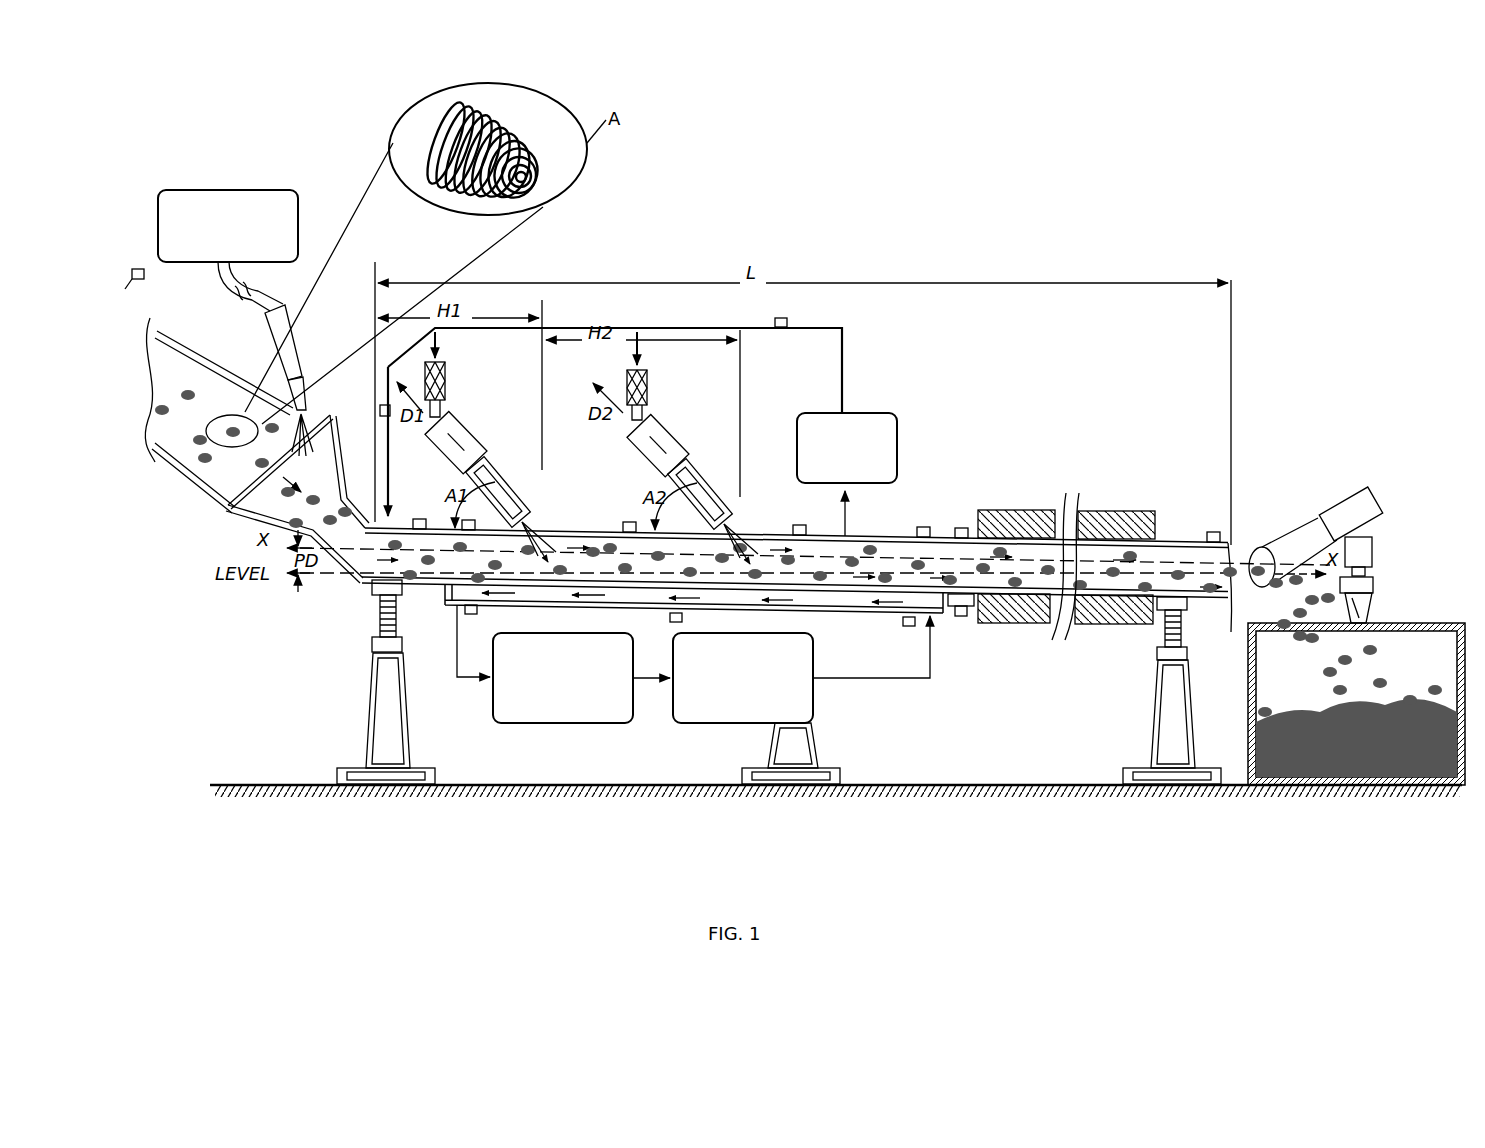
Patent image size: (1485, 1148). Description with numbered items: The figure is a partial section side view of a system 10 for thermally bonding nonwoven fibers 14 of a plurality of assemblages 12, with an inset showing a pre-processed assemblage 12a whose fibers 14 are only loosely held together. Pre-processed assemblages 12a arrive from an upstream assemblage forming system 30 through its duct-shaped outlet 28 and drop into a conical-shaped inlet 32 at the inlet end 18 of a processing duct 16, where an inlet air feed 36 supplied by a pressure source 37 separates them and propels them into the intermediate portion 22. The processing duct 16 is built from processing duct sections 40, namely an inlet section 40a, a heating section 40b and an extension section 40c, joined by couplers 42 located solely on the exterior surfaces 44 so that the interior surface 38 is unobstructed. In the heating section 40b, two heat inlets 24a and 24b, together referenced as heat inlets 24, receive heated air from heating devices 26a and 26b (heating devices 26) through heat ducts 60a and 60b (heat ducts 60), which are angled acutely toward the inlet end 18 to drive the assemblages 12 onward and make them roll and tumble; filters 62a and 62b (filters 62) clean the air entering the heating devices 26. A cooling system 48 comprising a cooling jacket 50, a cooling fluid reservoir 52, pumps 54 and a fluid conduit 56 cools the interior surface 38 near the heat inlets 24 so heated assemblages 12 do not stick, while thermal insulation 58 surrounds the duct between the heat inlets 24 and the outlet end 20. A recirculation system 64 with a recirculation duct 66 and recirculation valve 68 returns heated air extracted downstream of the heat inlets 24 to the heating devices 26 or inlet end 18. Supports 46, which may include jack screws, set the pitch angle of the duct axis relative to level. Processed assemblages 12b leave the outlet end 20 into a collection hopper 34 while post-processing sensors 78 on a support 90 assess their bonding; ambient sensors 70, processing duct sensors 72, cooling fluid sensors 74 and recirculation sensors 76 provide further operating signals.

The system 10 is at (286, 157).
The assemblages 12 is at (367, 532).
The pre-processed assemblage 12a is at (447, 107).
The processed assemblages 12b is at (1230, 566).
The fibers 14 is at (510, 133).
The processing duct 16 is at (363, 573).
The inlet end 18 is at (318, 532).
The outlet end 20 is at (1230, 626).
The intermediate portion 22 is at (625, 600).
The heat inlets 24 is at (638, 485).
The first heat inlet 24a is at (550, 507).
The second heat inlet 24b is at (760, 533).
The heating devices 26 is at (573, 426).
The first heating device 26a is at (458, 433).
The second heating device 26b is at (657, 433).
The outlet 28 is at (208, 487).
The assemblage forming system 30 is at (145, 307).
The conical-shaped inlet 32 is at (247, 513).
The collection hopper 34 is at (1390, 632).
The inlet air feed 36 is at (308, 350).
The pressure source 37 is at (228, 250).
The interior surface 38 is at (647, 580).
The processing duct sections 40 is at (366, 620).
The inlet section 40a is at (370, 585).
The heating section 40b is at (446, 585).
The extension section 40c is at (1047, 600).
The couplers 42 is at (402, 660).
The exterior surfaces 44 is at (413, 593).
The supports 46 is at (380, 742).
The cooling system 48 is at (828, 692).
The cooling jacket 50 is at (827, 613).
The cooling fluid reservoir 52 is at (563, 678).
The pumps 54 is at (743, 678).
The fluid conduit 56 is at (853, 678).
The thermal insulation 58 is at (1088, 510).
The heat ducts 60 is at (661, 477).
The first heat duct 60a is at (541, 446).
The second heat duct 60b is at (697, 513).
The filters 62 is at (567, 375).
The first filter 62a is at (450, 383).
The second filter 62b is at (650, 388).
The recirculation system 64 is at (857, 358).
The recirculation duct 66 is at (374, 320).
The recirculation valve 68 is at (847, 474).
The ambient sensors 70 is at (118, 285).
The processing duct sensors 72 is at (463, 521).
The cooling fluid sensors 74 is at (477, 613).
The recirculation sensors 76 is at (378, 408).
The post-processing sensors 78 is at (1345, 512).
The support 90 is at (1357, 607).